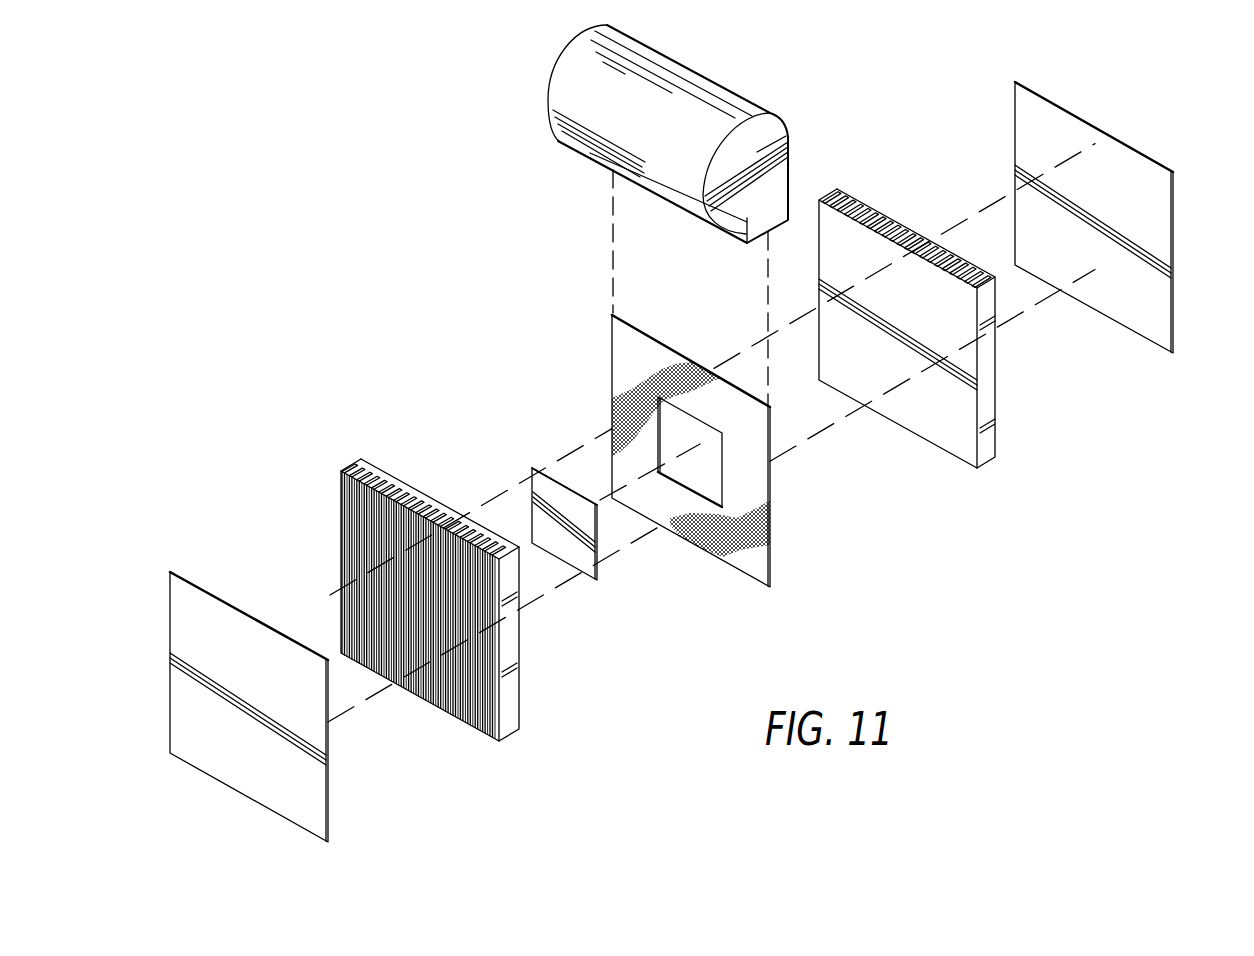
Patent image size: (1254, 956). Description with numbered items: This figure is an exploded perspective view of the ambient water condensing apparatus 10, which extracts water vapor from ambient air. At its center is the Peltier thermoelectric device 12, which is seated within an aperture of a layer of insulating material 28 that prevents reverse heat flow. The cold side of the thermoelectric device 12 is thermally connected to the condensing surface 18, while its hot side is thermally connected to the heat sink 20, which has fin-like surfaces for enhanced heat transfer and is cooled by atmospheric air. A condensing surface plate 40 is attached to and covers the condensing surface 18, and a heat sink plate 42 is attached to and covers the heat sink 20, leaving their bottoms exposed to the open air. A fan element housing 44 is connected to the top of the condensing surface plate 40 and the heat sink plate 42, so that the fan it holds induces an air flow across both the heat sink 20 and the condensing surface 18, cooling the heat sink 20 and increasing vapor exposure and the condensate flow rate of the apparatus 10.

The ambient water condensing apparatus 10 is at (309, 260).
The Peltier thermoelectric device 12 is at (570, 557).
The condensing surface 18 is at (942, 423).
The heat sink 20 is at (512, 707).
The layer of insulating material 28 is at (743, 563).
The condensing surface plate 40 is at (1153, 160).
The heat sink plate 42 is at (230, 750).
The fan element housing 44 is at (577, 93).